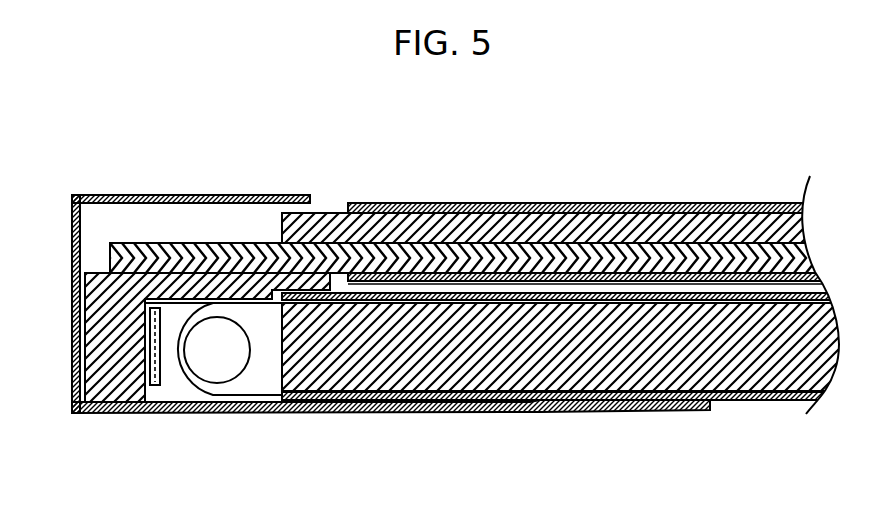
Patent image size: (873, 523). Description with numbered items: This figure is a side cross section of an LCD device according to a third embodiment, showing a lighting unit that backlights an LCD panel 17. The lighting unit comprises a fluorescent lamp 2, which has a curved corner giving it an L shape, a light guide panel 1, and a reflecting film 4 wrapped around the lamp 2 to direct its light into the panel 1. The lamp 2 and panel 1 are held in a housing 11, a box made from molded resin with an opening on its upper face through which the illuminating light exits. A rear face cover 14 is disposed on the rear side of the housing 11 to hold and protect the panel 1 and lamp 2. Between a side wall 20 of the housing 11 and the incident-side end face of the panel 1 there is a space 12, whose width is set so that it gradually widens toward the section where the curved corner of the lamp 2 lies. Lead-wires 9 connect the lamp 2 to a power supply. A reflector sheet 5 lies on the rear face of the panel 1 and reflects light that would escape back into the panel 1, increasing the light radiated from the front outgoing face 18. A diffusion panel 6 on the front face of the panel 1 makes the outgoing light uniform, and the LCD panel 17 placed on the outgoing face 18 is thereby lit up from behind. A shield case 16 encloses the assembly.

The panel 1 is at (558, 362).
The fluorescent lamp 2 is at (218, 355).
The reflecting film 4 is at (182, 390).
The reflector sheet 5 is at (782, 392).
The diffusion panel 6 is at (638, 292).
The lead-wires 9 is at (122, 410).
The housing 11 is at (110, 363).
The space 12 is at (168, 312).
The rear face cover 14 is at (438, 410).
The shield case 16 is at (217, 193).
The LCD panel 17 is at (493, 210).
The outgoing face 18 is at (672, 302).
The side wall 20 is at (140, 312).